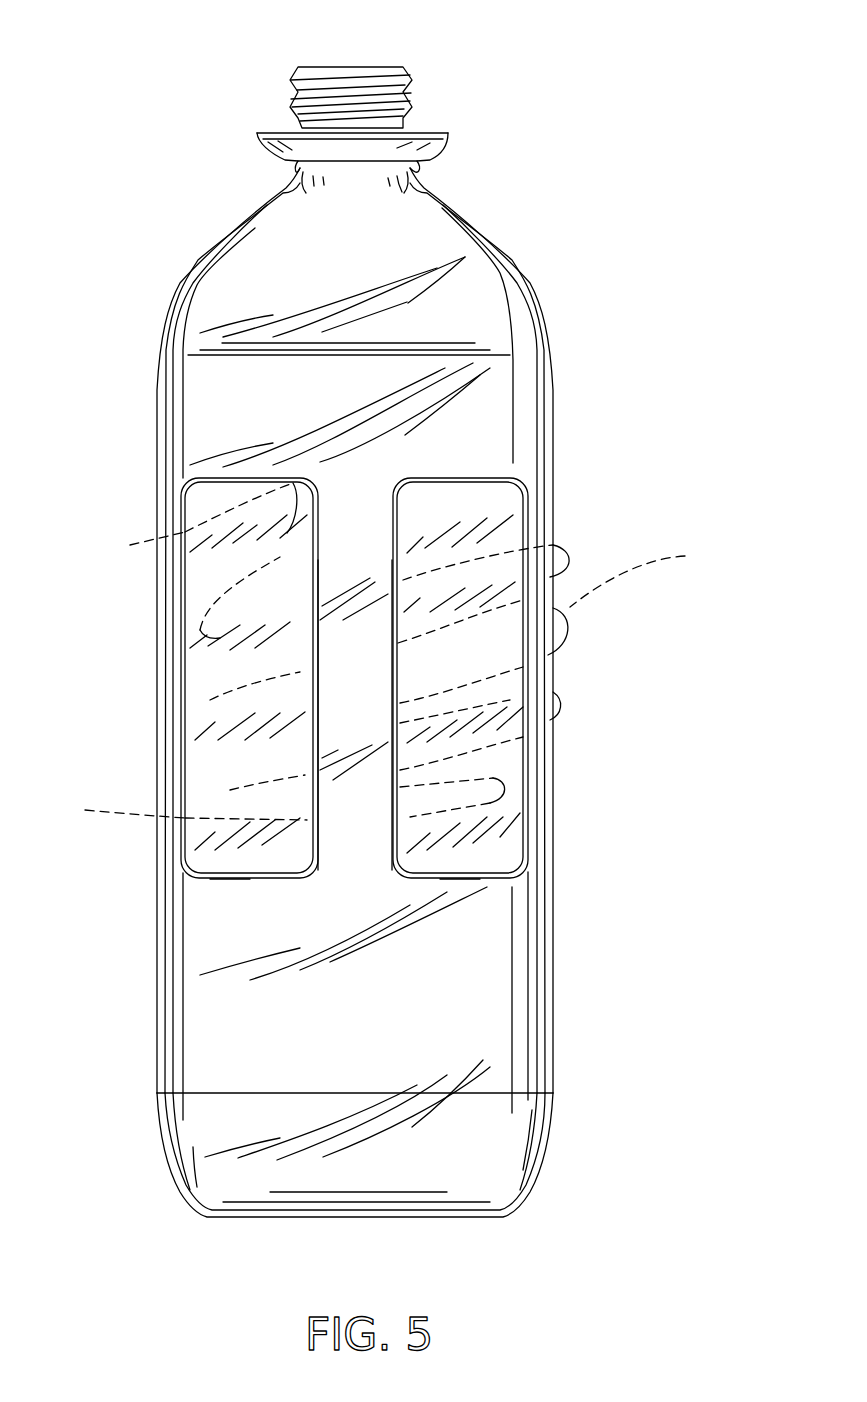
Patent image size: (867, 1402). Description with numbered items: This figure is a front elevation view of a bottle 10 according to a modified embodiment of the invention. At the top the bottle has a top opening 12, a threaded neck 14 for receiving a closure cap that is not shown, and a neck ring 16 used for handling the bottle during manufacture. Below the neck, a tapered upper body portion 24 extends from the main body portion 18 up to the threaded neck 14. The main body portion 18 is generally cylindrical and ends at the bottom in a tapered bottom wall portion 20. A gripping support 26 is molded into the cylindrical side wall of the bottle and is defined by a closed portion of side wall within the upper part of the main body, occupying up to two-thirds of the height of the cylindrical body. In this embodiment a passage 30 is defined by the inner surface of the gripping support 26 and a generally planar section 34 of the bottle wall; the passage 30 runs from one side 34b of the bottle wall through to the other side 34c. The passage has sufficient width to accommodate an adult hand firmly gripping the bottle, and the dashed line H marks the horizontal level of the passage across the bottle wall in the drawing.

The container 10 is at (674, 228).
The top opening 12 is at (397, 67).
The threaded neck 14 is at (405, 105).
The neck ring 16 is at (450, 134).
The main body portion 18 is at (606, 459).
The tapered bottom wall portion 20 is at (553, 1148).
The tapered upper body portion 24 is at (524, 273).
The gripping support 26 is at (368, 665).
The passage 30 is at (490, 656).
The generally planar section 34 is at (267, 675).
The one side of the bottle wall 34b is at (523, 793).
The other side of the bottle wall 34c is at (185, 739).
The horizontal hoop line H is at (637, 574).